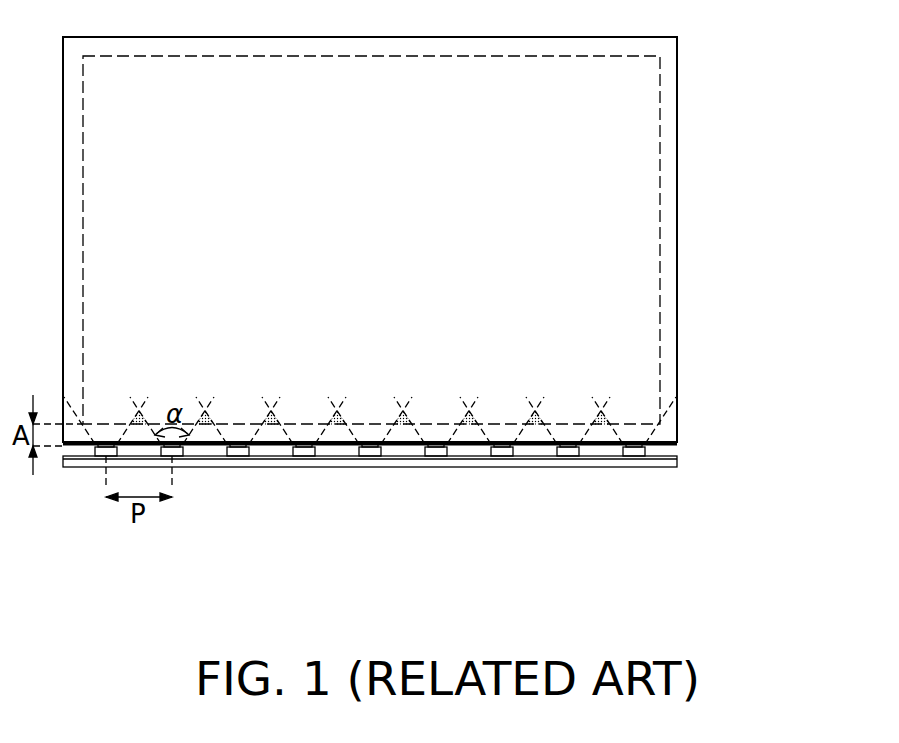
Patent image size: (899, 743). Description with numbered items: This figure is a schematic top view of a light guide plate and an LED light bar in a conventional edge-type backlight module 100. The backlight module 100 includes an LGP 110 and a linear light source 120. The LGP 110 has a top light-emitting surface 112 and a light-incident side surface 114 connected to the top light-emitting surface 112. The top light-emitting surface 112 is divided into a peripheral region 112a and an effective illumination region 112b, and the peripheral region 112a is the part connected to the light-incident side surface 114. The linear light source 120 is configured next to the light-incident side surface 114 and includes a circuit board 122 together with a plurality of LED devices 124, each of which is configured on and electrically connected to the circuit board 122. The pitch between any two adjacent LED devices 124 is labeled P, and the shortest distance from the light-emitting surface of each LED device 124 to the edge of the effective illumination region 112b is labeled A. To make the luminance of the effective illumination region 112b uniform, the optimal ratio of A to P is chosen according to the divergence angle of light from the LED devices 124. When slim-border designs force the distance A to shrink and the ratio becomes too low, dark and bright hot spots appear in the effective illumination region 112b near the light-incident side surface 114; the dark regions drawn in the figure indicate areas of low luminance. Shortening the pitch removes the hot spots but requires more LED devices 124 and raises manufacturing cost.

The conventional edge-type backlight module 100 is at (792, 598).
The light guide plate 110 is at (678, 70).
The top light-emitting surface 112 is at (802, 162).
The peripheral region 112a is at (674, 178).
The effective illumination region 112b is at (616, 260).
The light-incident side surface 114 is at (681, 446).
The linear light source 120 is at (380, 515).
The circuit board 122 is at (662, 468).
The LED devices 124 is at (370, 493).